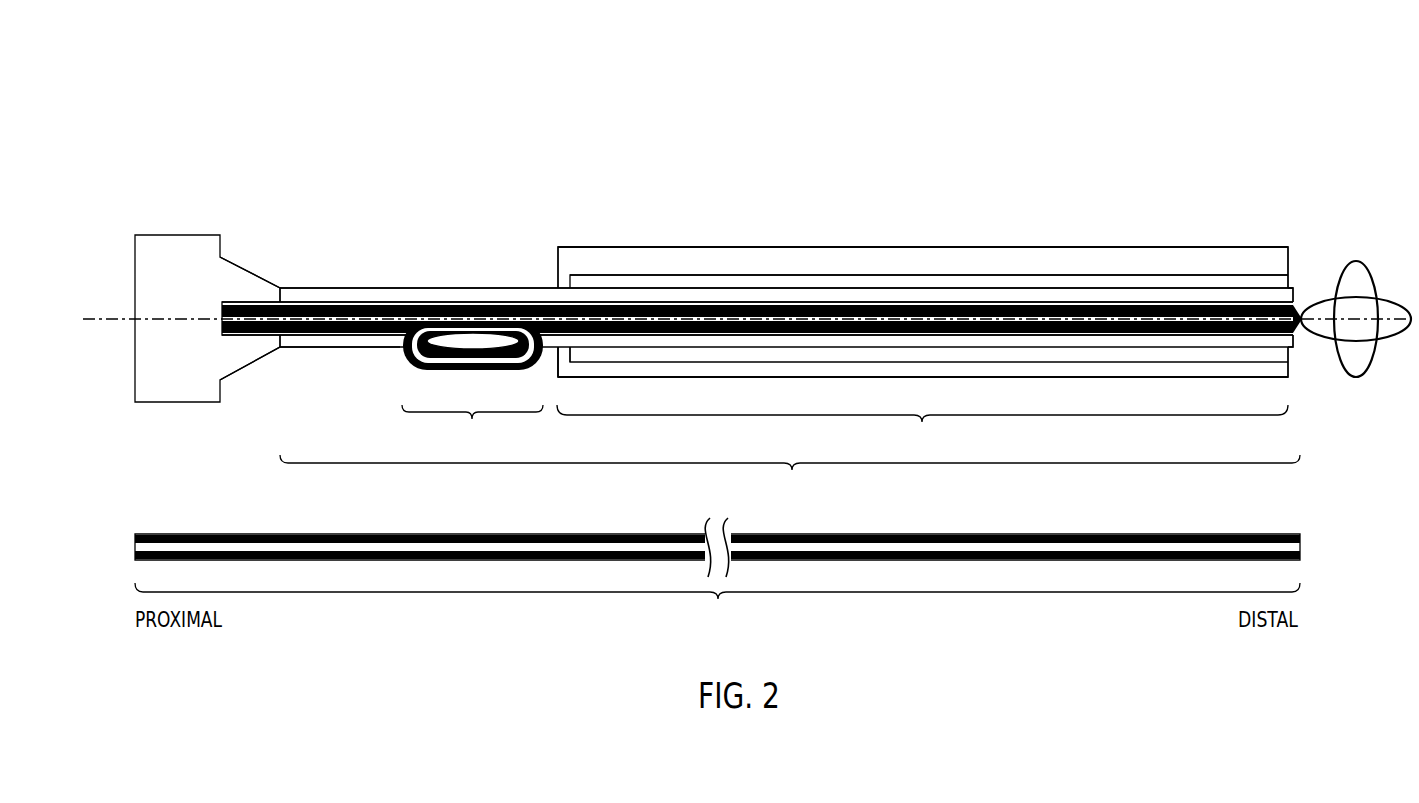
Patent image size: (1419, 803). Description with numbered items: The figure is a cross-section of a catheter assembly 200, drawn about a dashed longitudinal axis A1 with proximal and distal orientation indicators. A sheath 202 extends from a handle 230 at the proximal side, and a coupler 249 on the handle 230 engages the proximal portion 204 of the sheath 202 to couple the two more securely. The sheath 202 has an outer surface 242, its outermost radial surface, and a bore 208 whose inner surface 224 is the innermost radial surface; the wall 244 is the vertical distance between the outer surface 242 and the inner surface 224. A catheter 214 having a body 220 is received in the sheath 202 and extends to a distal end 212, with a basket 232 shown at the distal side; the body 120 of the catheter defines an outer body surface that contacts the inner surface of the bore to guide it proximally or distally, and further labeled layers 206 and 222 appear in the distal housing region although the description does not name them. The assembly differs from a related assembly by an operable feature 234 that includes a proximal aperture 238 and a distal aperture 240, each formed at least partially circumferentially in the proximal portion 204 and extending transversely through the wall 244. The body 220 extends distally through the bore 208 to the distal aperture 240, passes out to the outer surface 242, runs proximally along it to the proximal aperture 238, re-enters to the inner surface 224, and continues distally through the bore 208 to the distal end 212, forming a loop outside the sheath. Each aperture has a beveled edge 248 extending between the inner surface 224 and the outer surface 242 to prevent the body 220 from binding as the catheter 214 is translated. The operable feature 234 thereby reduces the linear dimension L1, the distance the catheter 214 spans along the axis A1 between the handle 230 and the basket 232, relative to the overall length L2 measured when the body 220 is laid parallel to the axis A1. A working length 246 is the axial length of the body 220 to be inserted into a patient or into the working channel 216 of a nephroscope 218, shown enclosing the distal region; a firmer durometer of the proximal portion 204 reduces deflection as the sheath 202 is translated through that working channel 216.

The catheter assembly 200 is at (1244, 198).
The body 120 is at (580, 285).
The sheath 202 is at (872, 283).
The proximal portion 204 is at (308, 293).
The housing 206 is at (1202, 297).
The bore 208 is at (630, 300).
The distal end 212 is at (1260, 305).
The catheter 214 is at (465, 302).
The working channel 216 is at (1142, 285).
The nephroscope 218 is at (1095, 248).
The body 220 is at (685, 308).
The shaft layer 222 is at (740, 308).
The inner surface 224 is at (793, 305).
The handle 230 is at (177, 234).
The basket 232 is at (1345, 266).
The operable feature 234 is at (472, 428).
The proximal aperture 238 is at (400, 346).
The distal aperture 240 is at (543, 348).
The outer surface 242 is at (370, 288).
The wall 244 is at (336, 345).
The working length 246 is at (922, 428).
The beveled edge 248 is at (517, 340).
The coupler 249 is at (252, 263).
The longitudinal axis A1 is at (113, 320).
The linear dimension L1 is at (790, 477).
The overall length L2 is at (717, 572).